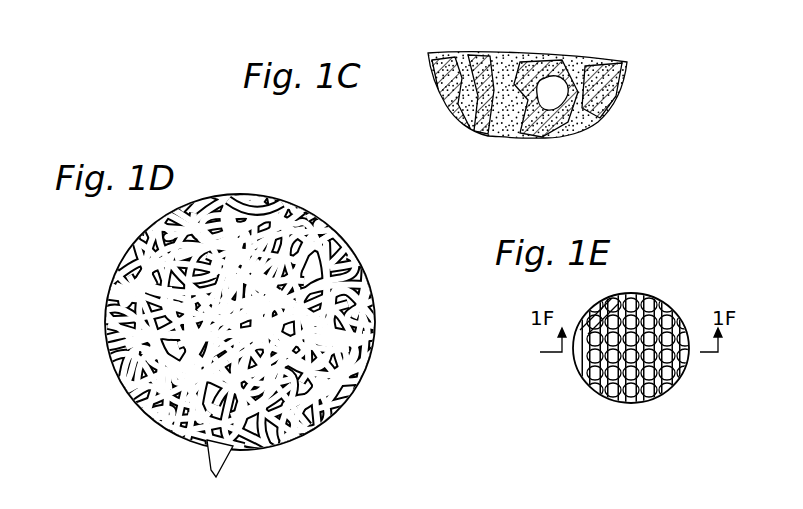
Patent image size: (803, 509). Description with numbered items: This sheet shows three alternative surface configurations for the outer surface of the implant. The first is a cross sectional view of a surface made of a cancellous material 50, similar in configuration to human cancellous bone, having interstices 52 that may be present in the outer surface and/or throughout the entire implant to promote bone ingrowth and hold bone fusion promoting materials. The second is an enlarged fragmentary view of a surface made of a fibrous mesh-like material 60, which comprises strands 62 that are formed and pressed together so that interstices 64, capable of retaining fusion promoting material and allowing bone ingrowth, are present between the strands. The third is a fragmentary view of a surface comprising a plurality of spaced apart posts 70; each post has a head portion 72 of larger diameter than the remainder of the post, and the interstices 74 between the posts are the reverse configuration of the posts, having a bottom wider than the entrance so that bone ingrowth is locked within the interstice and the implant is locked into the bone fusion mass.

In FIG. 1C, the cancellous material 50 is at (590, 47).
In FIG. 1C, the interstices 52 is at (592, 72).
In FIG. 1D, the mesh-like material 60 is at (104, 343).
In FIG. 1D, the strands 62 is at (283, 203).
In FIG. 1D, the interstices 64 is at (212, 474).
In FIG. 1E, the posts 70 is at (590, 388).
In FIG. 1E, the head portion 72 is at (574, 506).
In FIG. 1E, the interstices 74 is at (494, 498).